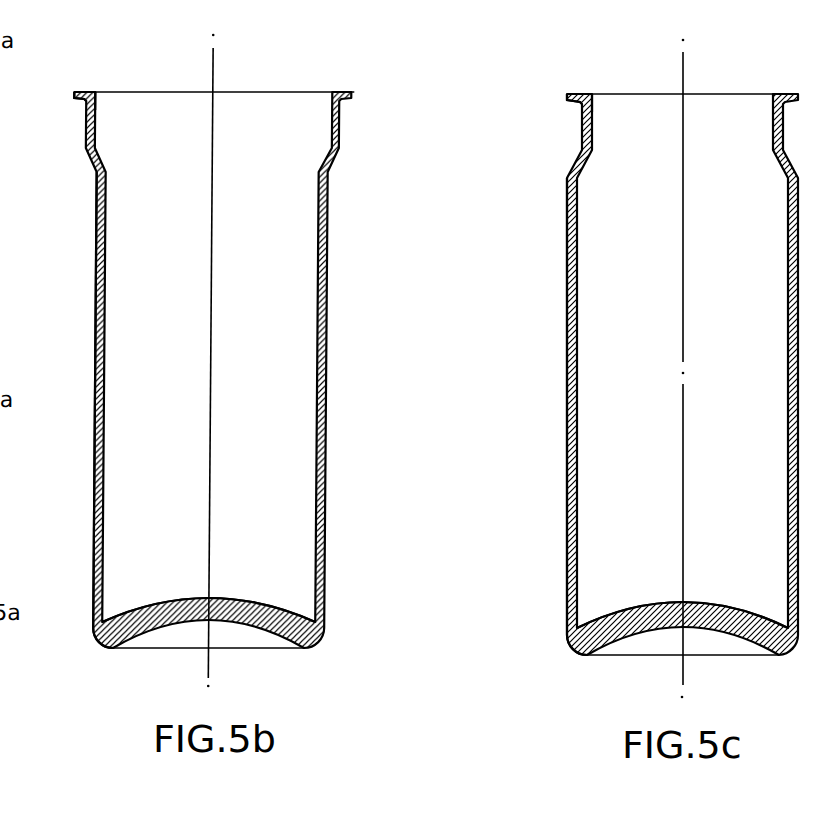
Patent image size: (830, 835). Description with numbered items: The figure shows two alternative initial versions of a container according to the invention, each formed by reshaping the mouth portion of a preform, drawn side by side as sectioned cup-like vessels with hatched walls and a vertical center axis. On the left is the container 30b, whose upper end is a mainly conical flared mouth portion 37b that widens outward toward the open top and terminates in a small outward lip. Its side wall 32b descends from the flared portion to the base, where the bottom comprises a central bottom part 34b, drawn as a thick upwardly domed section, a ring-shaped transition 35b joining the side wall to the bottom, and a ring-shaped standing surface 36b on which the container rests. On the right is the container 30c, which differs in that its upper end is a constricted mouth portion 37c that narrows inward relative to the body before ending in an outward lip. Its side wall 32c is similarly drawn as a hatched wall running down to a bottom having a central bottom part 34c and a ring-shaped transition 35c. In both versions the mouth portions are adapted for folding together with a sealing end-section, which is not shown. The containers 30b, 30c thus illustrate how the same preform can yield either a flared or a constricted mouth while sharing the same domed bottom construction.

In FIG. 5B, the container 30b is at (96, 331).
In FIG. 5B, the side wall 32b is at (97, 437).
In FIG. 5B, the central bottom part 34b is at (176, 600).
In FIG. 5B, the ring-shaped transition 35b is at (96, 630).
In FIG. 5B, the ring-shaped standing surface 36b is at (116, 651).
In FIG. 5B, the mainly conical flared mouth portion 37b is at (78, 90).
In FIG. 5C, the container 30c is at (549, 244).
In FIG. 5C, the side wall 32c is at (567, 403).
In FIG. 5C, the central bottom part 34c is at (643, 615).
In FIG. 5C, the ring-shaped transition 35c is at (566, 635).
In FIG. 5C, the constricted mouth portion 37c is at (592, 99).